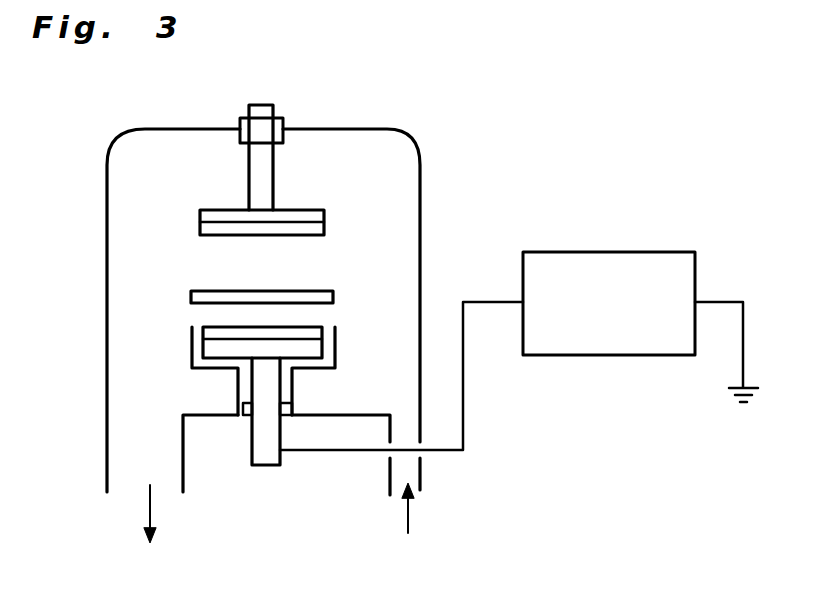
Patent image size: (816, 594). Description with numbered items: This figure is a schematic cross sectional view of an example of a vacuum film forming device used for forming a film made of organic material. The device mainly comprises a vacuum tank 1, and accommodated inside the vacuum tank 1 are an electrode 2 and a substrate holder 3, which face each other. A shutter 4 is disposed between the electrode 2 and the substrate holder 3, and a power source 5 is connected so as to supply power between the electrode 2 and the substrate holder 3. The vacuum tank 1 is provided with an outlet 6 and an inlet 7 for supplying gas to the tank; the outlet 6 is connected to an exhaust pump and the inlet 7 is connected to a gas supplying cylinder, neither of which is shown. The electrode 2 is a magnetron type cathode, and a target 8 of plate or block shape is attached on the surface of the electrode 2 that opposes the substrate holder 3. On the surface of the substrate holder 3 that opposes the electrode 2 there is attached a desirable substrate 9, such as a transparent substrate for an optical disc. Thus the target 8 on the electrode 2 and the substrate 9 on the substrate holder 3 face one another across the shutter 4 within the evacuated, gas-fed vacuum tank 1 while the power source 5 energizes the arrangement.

The vacuum tank 1 is at (420, 182).
The electrode 2 is at (265, 386).
The substrate holder 3 is at (263, 168).
The shutter 4 is at (333, 291).
The power source 5 is at (626, 252).
The outlet 6 is at (184, 472).
The inlet 7 is at (425, 473).
The target 8 is at (303, 333).
The substrate 9 is at (300, 240).